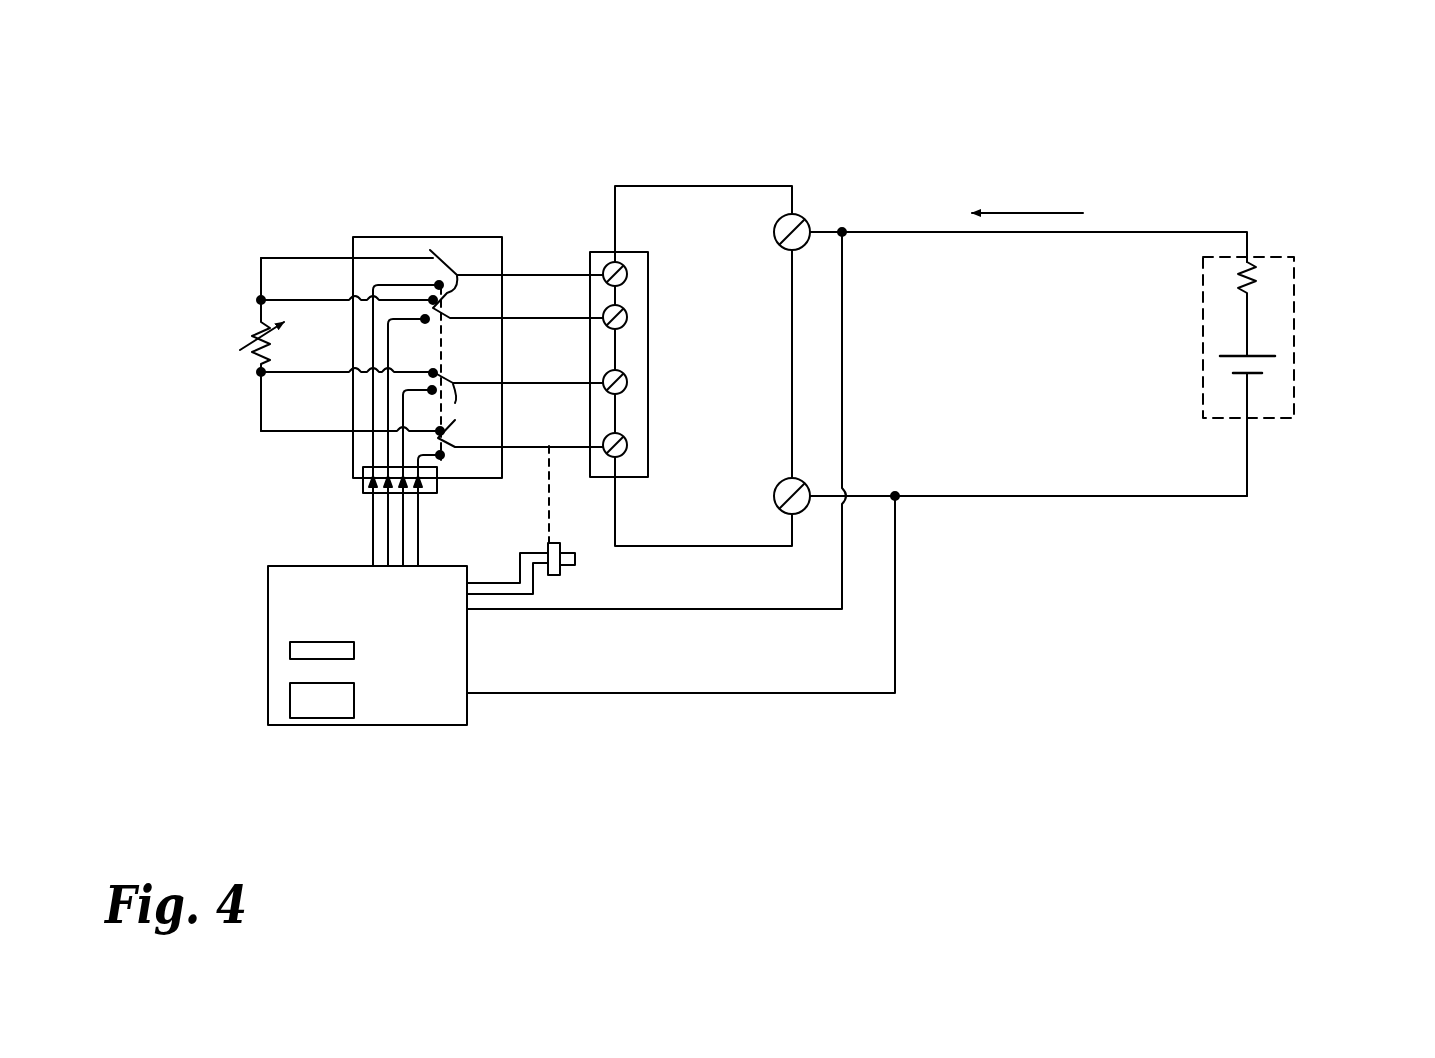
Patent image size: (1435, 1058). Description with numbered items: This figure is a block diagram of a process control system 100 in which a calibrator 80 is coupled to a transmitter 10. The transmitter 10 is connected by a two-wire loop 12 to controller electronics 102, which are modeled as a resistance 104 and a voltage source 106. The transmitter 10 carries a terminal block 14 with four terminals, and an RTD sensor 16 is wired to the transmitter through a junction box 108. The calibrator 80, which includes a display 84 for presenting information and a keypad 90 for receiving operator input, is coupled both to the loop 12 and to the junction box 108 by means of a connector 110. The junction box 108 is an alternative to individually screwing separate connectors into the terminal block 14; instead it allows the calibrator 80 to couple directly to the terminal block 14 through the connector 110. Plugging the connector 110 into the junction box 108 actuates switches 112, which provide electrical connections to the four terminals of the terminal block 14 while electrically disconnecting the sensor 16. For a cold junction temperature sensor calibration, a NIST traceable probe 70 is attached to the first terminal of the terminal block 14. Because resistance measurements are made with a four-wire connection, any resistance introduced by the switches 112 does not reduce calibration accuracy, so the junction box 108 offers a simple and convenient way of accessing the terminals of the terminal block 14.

The transmitter 10 is at (781, 183).
The two-wire loop 12 is at (973, 233).
The terminal block 14 is at (612, 251).
The RTD sensor 16 is at (250, 333).
The NIST traceable probe 70 is at (576, 558).
The calibrator 80 is at (450, 730).
The display 84 is at (290, 648).
The keypad 90 is at (290, 710).
The process control system 100 is at (1168, 124).
The controller electronics 102 is at (1298, 264).
The resistance 104 is at (1252, 292).
The voltage source 106 is at (1266, 355).
The junction box 108 is at (393, 236).
The connector 110 is at (363, 484).
The switches 112 is at (516, 348).